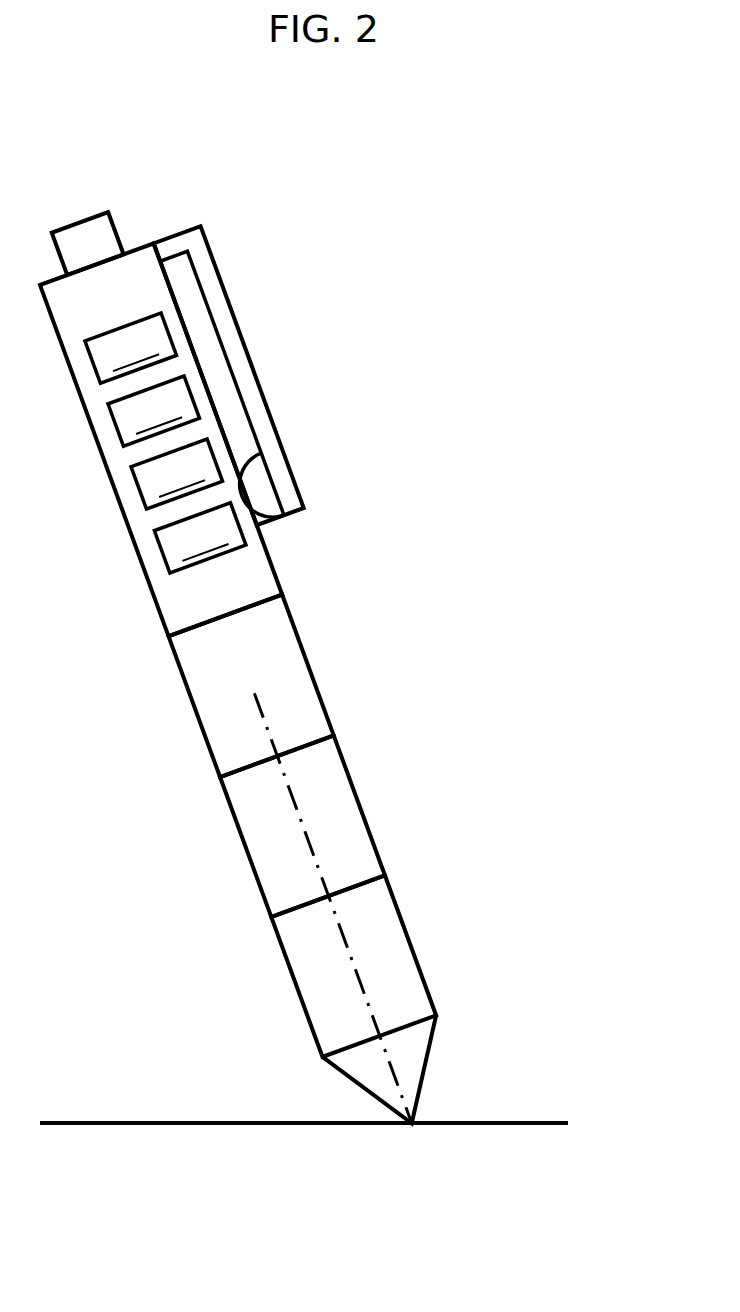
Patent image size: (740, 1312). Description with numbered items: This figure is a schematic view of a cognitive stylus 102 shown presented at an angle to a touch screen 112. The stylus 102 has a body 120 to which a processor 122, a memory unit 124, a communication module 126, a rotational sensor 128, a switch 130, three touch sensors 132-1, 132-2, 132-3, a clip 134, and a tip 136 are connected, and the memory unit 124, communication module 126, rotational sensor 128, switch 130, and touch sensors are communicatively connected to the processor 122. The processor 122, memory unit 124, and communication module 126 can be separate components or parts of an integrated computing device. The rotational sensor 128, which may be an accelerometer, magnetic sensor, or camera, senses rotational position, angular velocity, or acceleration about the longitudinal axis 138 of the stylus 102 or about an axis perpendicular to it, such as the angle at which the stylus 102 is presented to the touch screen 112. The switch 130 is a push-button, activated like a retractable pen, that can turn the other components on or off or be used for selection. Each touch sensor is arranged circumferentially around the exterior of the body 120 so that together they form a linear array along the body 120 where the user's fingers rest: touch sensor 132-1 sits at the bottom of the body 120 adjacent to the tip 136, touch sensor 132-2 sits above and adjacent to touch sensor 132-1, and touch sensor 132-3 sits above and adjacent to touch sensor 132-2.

The stylus 102 is at (442, 296).
The touch screen 112 is at (247, 1125).
The body 120 is at (161, 439).
The processor 122 is at (131, 348).
The memory unit 124 is at (154, 411).
The communication module 126 is at (177, 474).
The rotational sensor 128 is at (200, 538).
The switch 130 is at (88, 243).
The touch sensor 132-1 is at (353, 966).
The touch sensor 132-2 is at (302, 827).
The touch sensor 132-3 is at (251, 686).
The clip 134 is at (227, 376).
The tip 136 is at (395, 1079).
The longitudinal axis 138 is at (332, 908).